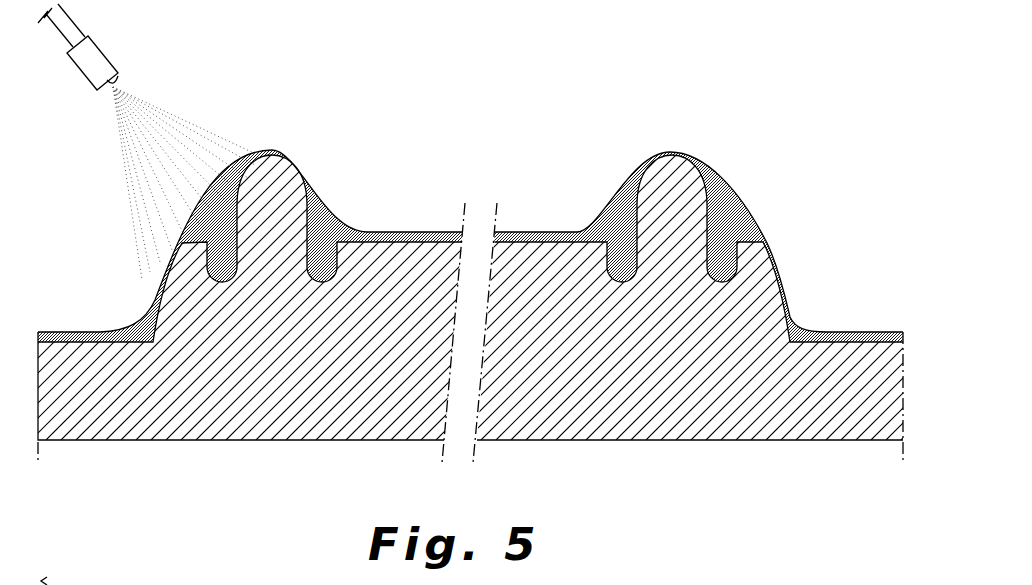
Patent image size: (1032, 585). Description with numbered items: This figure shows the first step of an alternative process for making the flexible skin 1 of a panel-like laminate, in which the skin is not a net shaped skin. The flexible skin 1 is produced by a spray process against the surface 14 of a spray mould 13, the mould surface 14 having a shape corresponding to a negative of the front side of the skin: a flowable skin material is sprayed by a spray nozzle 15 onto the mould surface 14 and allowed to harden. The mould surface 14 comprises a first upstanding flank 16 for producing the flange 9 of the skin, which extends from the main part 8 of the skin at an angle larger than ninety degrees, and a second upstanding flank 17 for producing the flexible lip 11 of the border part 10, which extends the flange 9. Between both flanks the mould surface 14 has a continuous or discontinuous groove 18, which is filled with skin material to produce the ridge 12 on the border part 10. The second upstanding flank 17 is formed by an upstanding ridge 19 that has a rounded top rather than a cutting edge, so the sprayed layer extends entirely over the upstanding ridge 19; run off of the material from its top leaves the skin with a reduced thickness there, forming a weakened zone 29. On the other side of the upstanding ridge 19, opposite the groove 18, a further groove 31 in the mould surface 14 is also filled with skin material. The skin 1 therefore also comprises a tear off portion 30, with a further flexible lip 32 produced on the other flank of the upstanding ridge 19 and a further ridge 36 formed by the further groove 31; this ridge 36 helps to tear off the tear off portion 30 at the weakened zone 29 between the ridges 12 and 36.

The flexible skin 1 is at (38, 333).
The main part 8 is at (118, 333).
The flange 9 is at (157, 280).
The border part 10 is at (193, 207).
The flexible lip 11 is at (238, 170).
The ridge 12 is at (182, 240).
The spray mould 13 is at (222, 412).
The mould surface 14 is at (92, 330).
The spray nozzle 15 is at (92, 62).
The first upstanding flank 16 is at (147, 307).
The second upstanding flank 17 is at (212, 192).
The groove 18 is at (317, 260).
The upstanding ridge 19 is at (277, 173).
The weakened zone 29 is at (270, 150).
The tear off portion 30 is at (390, 230).
The further groove 31 is at (337, 273).
The further flexible lip 32 is at (237, 263).
The further ridge 36 is at (362, 230).